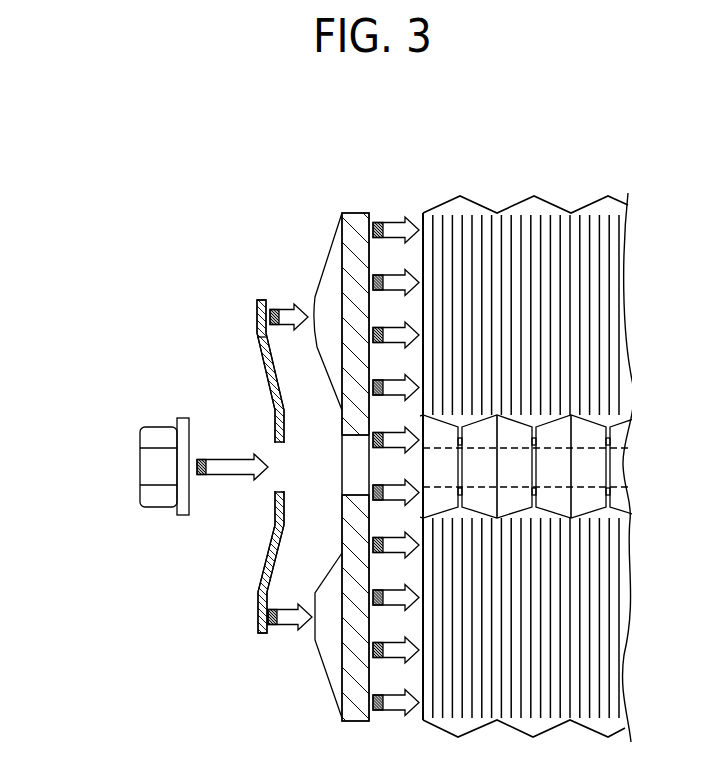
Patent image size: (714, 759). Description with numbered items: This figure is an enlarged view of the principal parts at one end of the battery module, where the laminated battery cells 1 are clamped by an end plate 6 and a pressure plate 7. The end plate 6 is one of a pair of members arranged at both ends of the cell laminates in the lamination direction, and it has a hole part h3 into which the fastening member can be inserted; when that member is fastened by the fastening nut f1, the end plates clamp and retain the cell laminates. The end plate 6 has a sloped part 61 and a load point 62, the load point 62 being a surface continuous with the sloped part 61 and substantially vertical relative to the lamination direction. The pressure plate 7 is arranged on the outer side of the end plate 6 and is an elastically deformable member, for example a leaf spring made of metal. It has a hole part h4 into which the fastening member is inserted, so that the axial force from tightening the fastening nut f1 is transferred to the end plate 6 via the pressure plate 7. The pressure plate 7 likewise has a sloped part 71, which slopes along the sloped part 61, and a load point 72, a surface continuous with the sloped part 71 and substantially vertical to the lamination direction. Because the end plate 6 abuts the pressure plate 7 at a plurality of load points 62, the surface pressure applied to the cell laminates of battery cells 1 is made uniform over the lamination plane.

The battery cell 1 is at (505, 132).
The end plate 6 is at (280, 407).
The sloped part 61 is at (327, 378).
The load point 62 is at (318, 292).
The pressure plate 7 is at (218, 410).
The sloped part 71 is at (257, 380).
The load point 72 is at (255, 325).
The fastening nut f1 is at (140, 440).
The hole part h3 is at (346, 480).
The hole part h4 is at (274, 480).